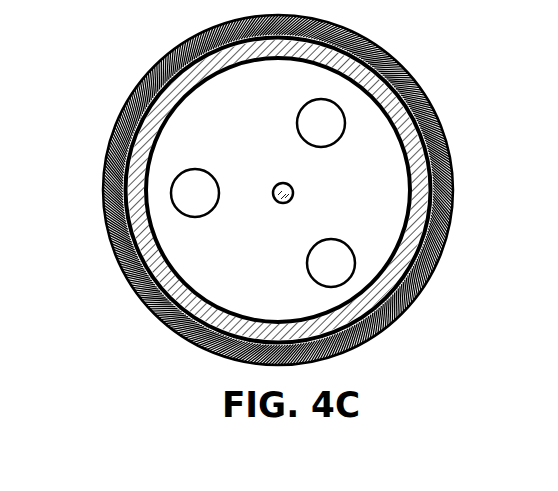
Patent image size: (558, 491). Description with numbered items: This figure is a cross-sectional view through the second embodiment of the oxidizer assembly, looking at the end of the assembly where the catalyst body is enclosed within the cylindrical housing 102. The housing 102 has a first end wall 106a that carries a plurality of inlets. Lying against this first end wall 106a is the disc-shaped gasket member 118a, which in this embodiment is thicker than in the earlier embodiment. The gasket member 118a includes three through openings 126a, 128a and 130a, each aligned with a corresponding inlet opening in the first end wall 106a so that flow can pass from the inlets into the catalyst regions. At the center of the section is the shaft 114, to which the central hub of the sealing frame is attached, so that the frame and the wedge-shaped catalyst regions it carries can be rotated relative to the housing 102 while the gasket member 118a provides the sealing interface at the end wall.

The housing 102 is at (415, 85).
The first end wall 106a is at (430, 176).
The shaft 114 is at (290, 187).
The gasket member 118a is at (172, 237).
The through opening 126a is at (331, 117).
The through opening 128a is at (345, 277).
The through opening 130a is at (127, 107).